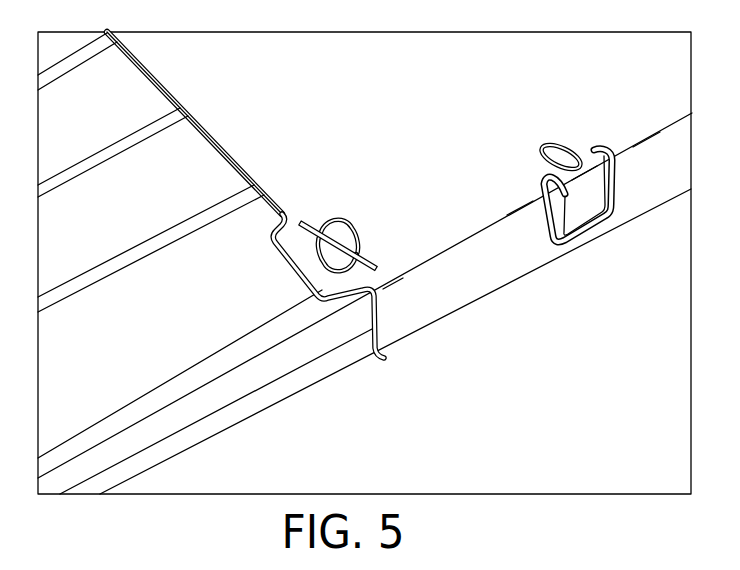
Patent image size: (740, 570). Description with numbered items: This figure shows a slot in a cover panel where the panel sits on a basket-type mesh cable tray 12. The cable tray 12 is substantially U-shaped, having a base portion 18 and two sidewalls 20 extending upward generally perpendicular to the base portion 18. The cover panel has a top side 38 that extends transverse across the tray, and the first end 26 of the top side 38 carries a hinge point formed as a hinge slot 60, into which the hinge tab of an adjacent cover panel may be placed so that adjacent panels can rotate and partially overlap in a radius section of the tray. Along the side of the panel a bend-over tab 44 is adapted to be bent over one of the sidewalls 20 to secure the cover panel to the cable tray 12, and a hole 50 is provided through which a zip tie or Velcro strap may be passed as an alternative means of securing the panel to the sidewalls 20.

The cable tray 12 is at (158, 401).
The base portion 18 is at (137, 248).
The sidewalls 20 is at (208, 428).
The first end 26 is at (400, 232).
The top side 38 is at (355, 112).
The bend-over tab 44 is at (577, 243).
The hole 50 is at (558, 148).
The hinge slot 60 is at (327, 274).